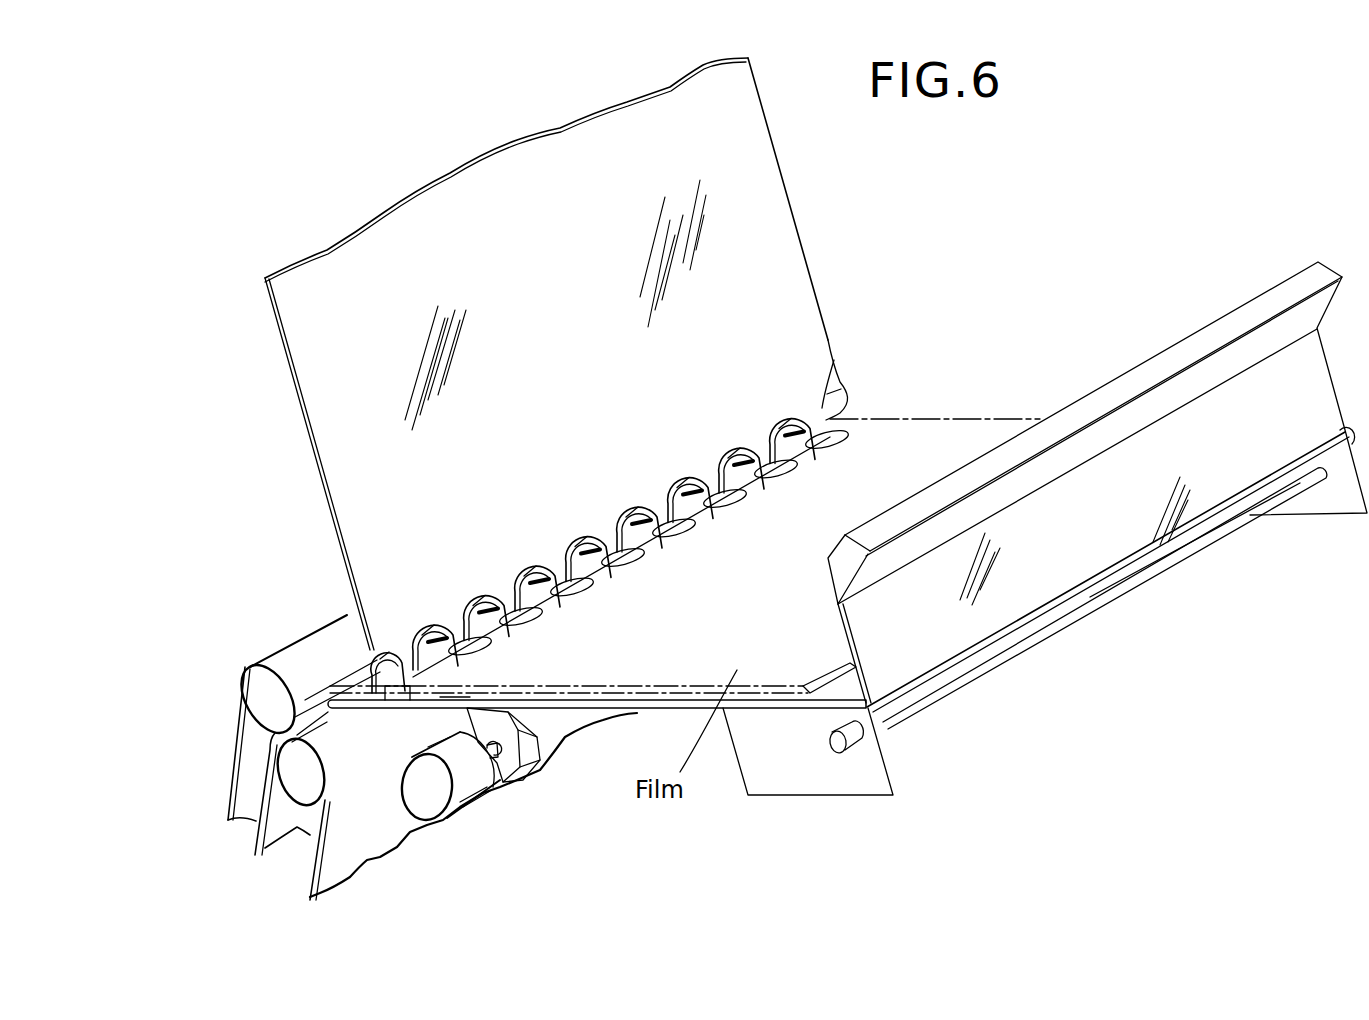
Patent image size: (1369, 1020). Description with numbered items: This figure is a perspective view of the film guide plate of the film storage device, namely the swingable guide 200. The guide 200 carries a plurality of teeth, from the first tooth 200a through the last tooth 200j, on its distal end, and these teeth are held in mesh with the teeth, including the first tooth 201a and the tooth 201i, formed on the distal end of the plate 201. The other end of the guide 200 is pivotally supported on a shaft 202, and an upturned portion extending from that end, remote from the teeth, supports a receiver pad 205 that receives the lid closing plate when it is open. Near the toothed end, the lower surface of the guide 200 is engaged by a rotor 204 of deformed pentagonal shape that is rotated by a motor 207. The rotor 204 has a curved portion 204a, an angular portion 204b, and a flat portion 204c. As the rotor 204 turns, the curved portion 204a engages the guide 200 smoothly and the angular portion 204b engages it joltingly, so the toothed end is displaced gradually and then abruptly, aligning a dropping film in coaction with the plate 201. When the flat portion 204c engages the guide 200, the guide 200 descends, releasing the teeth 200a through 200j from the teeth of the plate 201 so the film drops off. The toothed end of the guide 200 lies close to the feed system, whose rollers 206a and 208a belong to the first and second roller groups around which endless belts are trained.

The swingable guide 200 is at (632, 721).
The tooth of guide 200a is at (347, 708).
The tooth of guide 200j is at (808, 448).
The plate 201 is at (790, 282).
The tooth of plate 201a is at (407, 667).
The tooth of plate 201i is at (850, 412).
The shaft 202 is at (833, 750).
The rotor 204 is at (507, 778).
The curved portion 204a is at (468, 708).
The angular portion 204b is at (525, 703).
The flat portion 204c is at (448, 695).
The receiver pad 205 is at (1071, 425).
The roller 206a is at (260, 692).
The motor 207 is at (432, 798).
The roller 208a is at (297, 780).